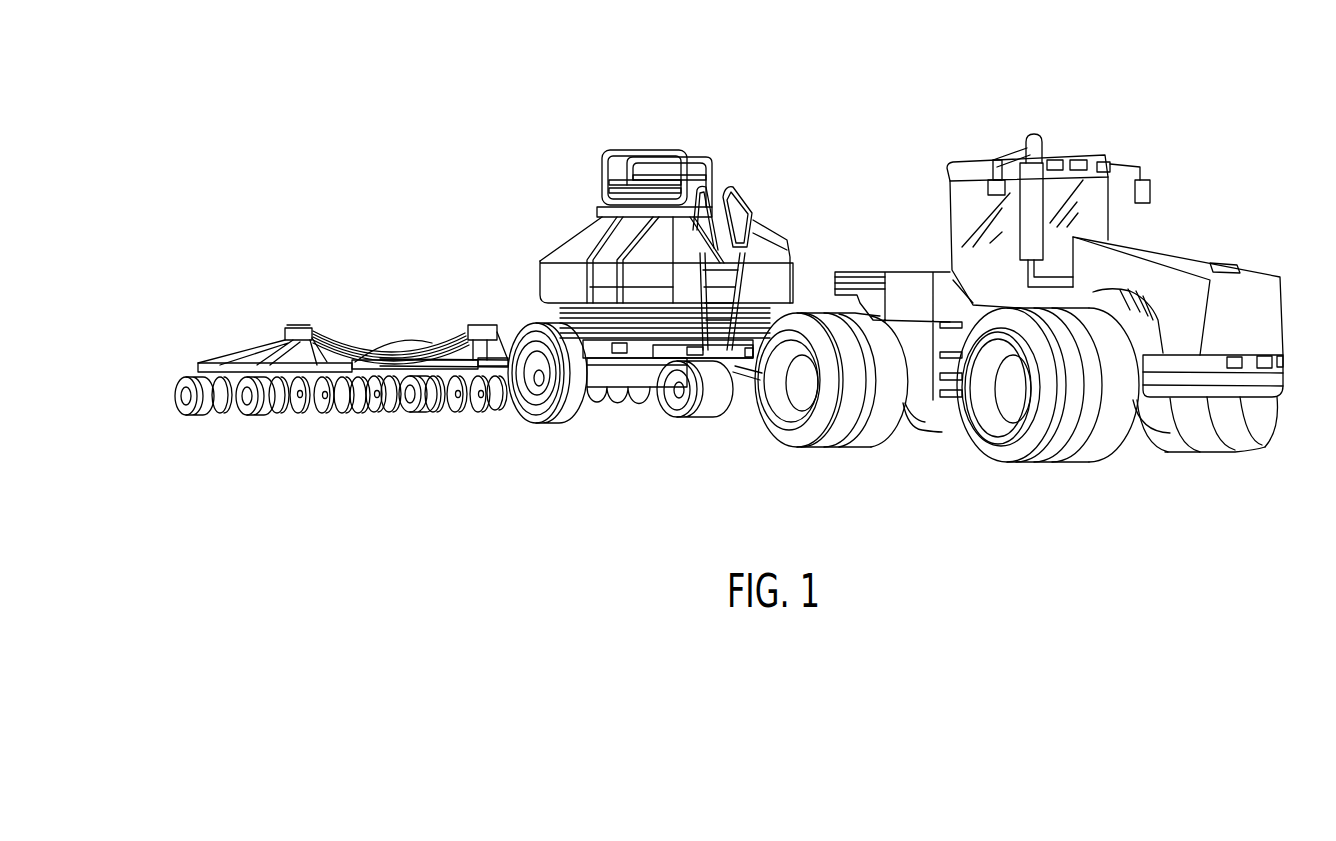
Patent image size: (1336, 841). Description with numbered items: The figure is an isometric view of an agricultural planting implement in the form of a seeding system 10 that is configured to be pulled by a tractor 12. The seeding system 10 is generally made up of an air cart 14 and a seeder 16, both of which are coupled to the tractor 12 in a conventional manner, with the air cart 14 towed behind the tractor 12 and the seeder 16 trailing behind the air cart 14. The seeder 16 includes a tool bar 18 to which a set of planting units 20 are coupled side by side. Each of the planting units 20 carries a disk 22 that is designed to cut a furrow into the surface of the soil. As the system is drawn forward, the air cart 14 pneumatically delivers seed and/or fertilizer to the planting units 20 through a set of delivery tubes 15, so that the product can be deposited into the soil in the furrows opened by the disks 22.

The seeding system 10 is at (1232, 64).
The tractor 12 is at (1231, 254).
The air cart 14 is at (718, 143).
The delivery tubes 15 is at (346, 338).
The seeder 16 is at (281, 314).
The tool bar 18 is at (390, 346).
The planting units 20 is at (476, 415).
The disk 22 is at (306, 409).